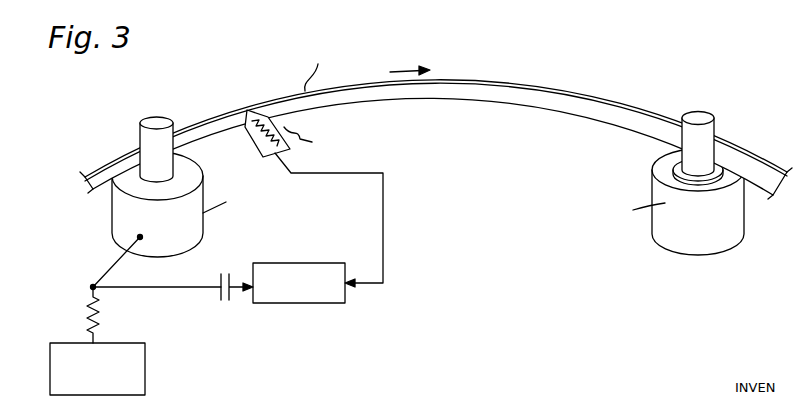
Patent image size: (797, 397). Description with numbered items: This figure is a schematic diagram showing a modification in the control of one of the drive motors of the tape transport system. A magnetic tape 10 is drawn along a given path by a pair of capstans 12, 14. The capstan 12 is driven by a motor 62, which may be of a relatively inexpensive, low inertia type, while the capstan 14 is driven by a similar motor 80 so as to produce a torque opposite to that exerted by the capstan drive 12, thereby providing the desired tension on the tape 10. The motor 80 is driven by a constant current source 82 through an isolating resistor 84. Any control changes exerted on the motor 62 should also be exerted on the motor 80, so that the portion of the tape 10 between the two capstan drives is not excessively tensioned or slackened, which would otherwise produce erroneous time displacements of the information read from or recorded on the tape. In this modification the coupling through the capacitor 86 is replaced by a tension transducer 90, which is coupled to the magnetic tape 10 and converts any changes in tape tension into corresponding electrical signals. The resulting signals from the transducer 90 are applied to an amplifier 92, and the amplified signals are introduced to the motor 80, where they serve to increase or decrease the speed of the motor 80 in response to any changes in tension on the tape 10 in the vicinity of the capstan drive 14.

The magnetic tape 10 is at (467, 88).
The capstan 12 is at (707, 137).
The capstan 14 is at (152, 142).
The motor 62 is at (658, 202).
The motor 80 is at (195, 204).
The constant current source 82 is at (145, 366).
The isolating resistor 84 is at (90, 327).
The capacitor 86 is at (220, 298).
The tension transducer 90 is at (263, 157).
The amplifier 92 is at (323, 263).